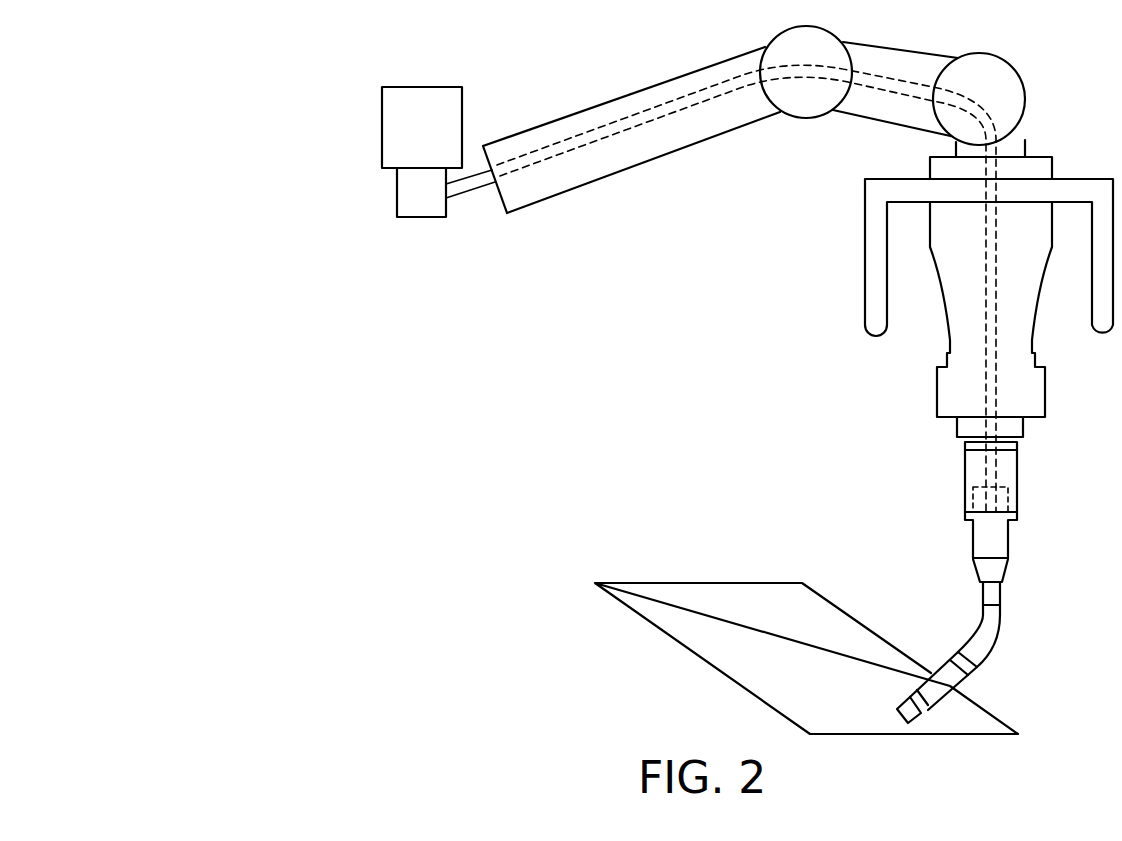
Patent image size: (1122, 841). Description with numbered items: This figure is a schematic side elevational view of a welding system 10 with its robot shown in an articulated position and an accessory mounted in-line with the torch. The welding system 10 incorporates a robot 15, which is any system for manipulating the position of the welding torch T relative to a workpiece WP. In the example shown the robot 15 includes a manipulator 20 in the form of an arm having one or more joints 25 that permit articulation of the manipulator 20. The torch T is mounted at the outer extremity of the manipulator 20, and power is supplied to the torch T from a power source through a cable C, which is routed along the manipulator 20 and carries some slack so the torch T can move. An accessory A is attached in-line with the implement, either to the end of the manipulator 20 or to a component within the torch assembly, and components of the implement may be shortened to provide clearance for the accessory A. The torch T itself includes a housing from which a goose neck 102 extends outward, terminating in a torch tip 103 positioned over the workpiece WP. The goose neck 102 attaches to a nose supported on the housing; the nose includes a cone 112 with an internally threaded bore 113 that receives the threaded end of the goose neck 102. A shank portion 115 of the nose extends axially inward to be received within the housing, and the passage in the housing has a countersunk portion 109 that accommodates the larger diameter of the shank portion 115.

The welding system 10 is at (237, 50).
The robot 15 is at (573, 202).
The manipulator 20 is at (647, 142).
The joints 25 is at (816, 58).
The accessory A is at (878, 310).
The cable C is at (985, 318).
The workpiece WP is at (737, 602).
The torch T is at (963, 582).
The shank portion 115 is at (1008, 498).
The countersunk portion 109 is at (977, 502).
The cone 112 is at (978, 578).
The internally threaded bore 113 is at (998, 570).
The goose neck 102 is at (990, 630).
The torch tip 103 is at (927, 687).